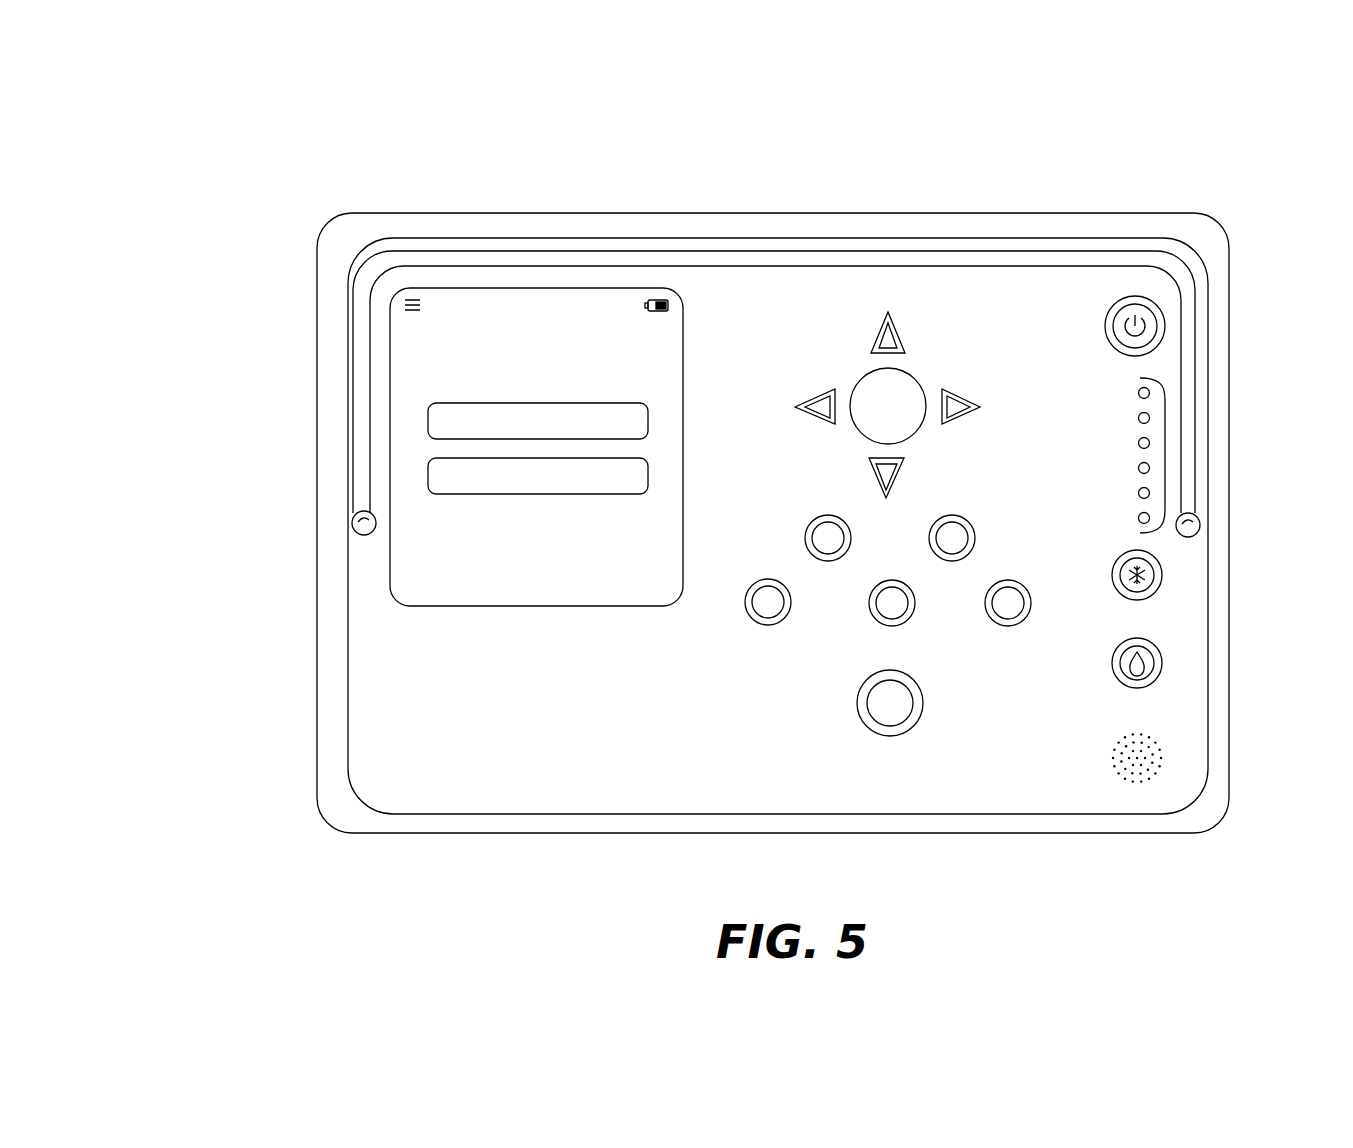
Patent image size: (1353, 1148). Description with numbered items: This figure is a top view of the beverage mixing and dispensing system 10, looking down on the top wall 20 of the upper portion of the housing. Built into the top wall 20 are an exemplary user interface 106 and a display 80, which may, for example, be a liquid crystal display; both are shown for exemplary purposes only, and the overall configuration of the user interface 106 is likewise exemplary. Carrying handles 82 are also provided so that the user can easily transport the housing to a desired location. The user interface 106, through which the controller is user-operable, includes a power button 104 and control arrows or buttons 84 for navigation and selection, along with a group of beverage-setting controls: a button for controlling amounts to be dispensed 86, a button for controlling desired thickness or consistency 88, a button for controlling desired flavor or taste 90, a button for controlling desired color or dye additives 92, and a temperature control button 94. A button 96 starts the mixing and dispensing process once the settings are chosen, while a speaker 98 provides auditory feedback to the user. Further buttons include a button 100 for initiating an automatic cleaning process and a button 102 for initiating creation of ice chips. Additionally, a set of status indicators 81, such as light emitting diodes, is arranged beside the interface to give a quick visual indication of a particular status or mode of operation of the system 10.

The beverage mixing and dispensing system 10 is at (606, 163).
The top wall 20 is at (347, 262).
The display 80 is at (390, 333).
The status indicators 81 is at (1177, 488).
The carrying handles 82 is at (364, 484).
The control arrows or buttons 84 is at (817, 357).
The button for controlling amounts to be dispensed 86 is at (804, 530).
The button for controlling desired thickness/consistency 88 is at (748, 598).
The button for controlling desired flavor or taste 90 is at (955, 518).
The button for controlling desired color or dye additives 92 is at (1031, 604).
The temperature control button 94 is at (915, 601).
The button for starting a mixing and dispensing process 96 is at (923, 712).
The speaker 98 is at (1163, 745).
The button for initiating an automatic cleaning process 100 is at (1162, 660).
The button for initiating creation of ice chips 102 is at (1162, 573).
The power button 104 is at (1165, 318).
The user interface 106 is at (938, 304).